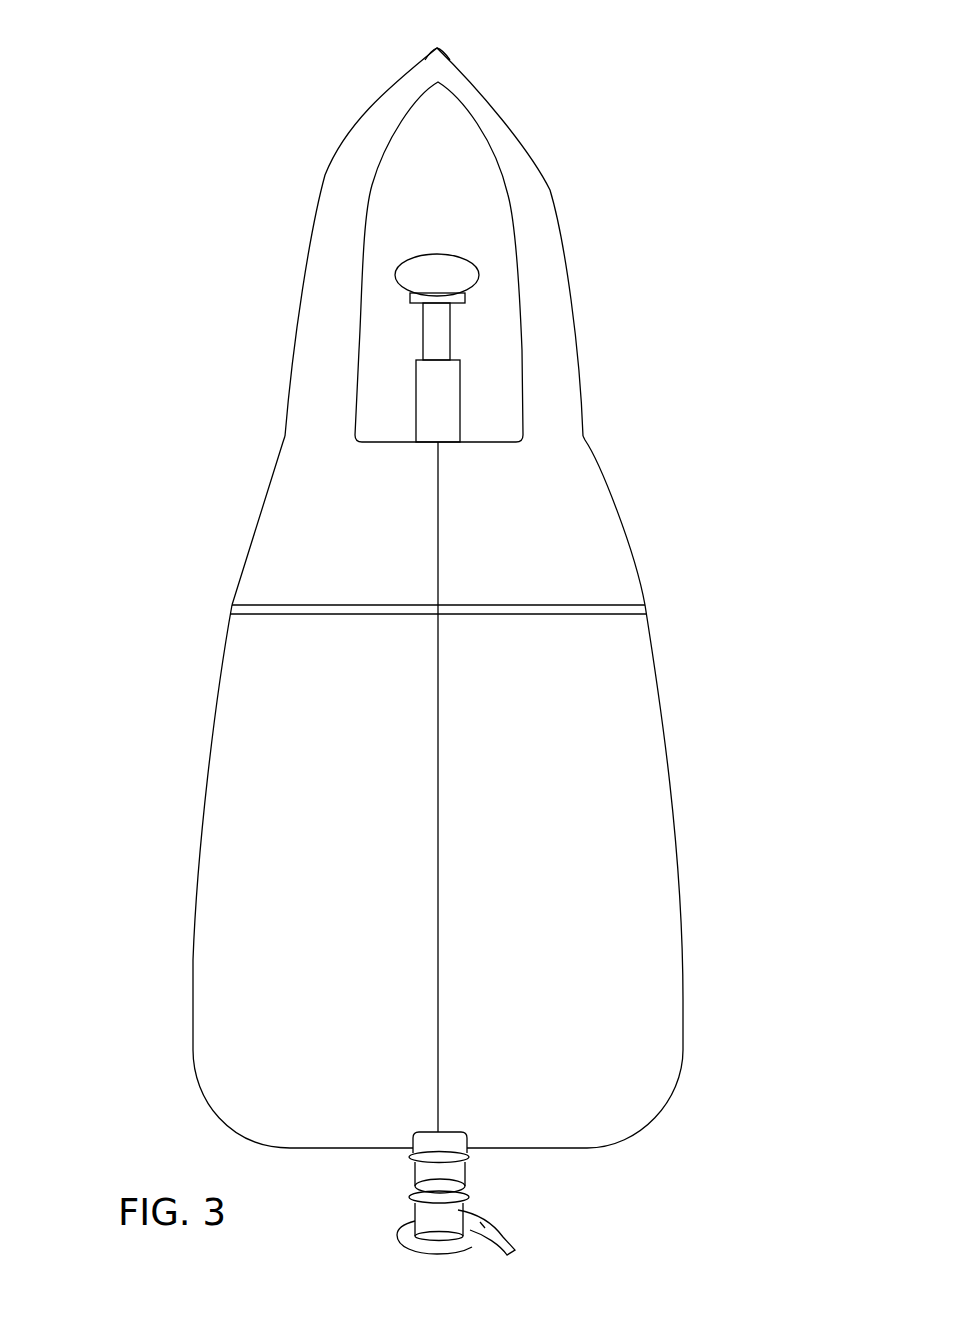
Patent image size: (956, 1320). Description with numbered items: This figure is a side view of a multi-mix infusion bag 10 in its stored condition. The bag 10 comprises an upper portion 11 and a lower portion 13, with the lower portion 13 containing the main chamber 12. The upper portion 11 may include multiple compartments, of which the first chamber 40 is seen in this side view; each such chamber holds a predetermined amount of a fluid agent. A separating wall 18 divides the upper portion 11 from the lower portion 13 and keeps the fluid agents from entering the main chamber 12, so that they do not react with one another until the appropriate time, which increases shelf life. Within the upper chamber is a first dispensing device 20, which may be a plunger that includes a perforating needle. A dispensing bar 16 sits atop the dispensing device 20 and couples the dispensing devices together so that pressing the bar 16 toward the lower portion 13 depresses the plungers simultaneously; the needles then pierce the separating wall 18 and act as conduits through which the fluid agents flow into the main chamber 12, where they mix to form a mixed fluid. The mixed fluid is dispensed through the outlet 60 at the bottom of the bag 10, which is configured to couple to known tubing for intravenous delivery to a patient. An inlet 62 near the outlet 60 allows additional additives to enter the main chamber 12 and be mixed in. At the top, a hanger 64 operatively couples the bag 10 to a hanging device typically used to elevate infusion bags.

The multi-mix infusion bag 10 is at (682, 51).
The upper portion 11 is at (193, 368).
The main chamber 12 is at (567, 828).
The lower portion 13 is at (168, 788).
The dispensing bar 16 is at (452, 276).
The separating wall 18 is at (590, 615).
The first dispensing device 20 is at (432, 334).
The first chamber 40 is at (277, 538).
The outlet 60 is at (516, 1243).
The inlet 62 is at (427, 1165).
The hanger 64 is at (446, 47).